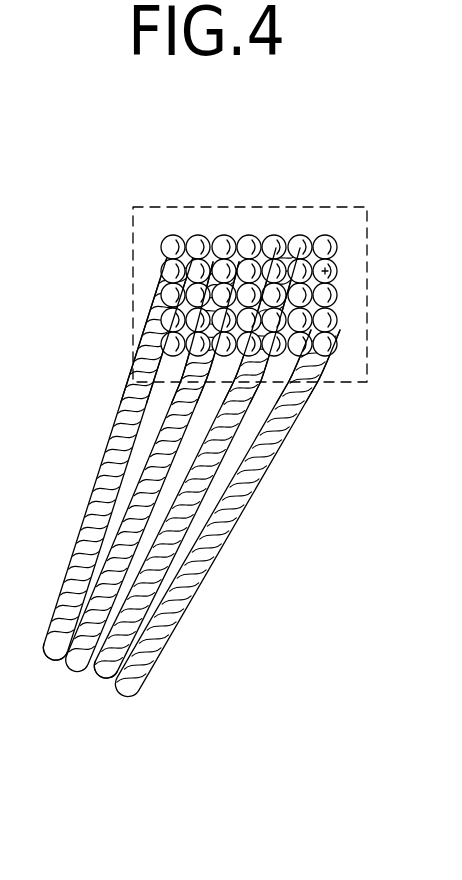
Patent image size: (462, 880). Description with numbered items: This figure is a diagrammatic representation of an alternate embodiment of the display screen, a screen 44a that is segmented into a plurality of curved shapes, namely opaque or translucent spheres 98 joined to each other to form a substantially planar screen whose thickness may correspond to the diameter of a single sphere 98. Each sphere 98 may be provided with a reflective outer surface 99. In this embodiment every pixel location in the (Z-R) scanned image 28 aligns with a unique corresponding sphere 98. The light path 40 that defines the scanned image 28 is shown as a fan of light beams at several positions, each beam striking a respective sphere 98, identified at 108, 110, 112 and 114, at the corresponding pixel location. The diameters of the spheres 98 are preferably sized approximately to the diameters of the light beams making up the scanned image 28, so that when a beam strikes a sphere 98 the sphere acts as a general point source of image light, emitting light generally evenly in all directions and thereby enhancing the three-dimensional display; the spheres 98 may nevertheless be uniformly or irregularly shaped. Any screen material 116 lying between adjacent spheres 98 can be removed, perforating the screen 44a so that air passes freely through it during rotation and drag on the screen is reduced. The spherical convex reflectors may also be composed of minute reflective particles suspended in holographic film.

The scanned image 28 is at (65, 658).
The light path 40 is at (99, 677).
The screen 44a is at (368, 206).
The spheres 98 is at (337, 293).
The reflective outer surface 99 is at (329, 269).
The sphere 108 is at (176, 270).
The sphere 110 is at (229, 296).
The sphere 112 is at (280, 322).
The sphere 114 is at (336, 341).
The screen material 116 is at (294, 262).